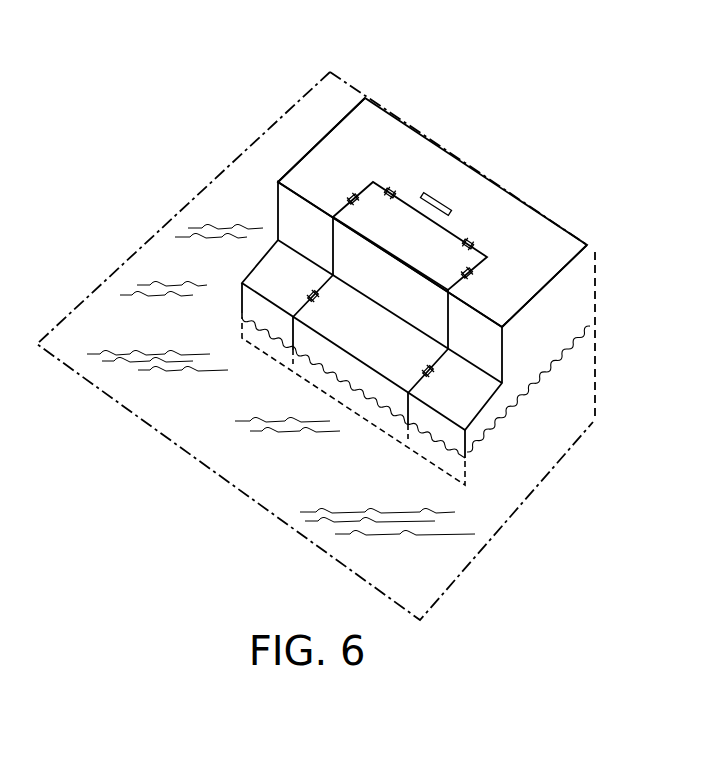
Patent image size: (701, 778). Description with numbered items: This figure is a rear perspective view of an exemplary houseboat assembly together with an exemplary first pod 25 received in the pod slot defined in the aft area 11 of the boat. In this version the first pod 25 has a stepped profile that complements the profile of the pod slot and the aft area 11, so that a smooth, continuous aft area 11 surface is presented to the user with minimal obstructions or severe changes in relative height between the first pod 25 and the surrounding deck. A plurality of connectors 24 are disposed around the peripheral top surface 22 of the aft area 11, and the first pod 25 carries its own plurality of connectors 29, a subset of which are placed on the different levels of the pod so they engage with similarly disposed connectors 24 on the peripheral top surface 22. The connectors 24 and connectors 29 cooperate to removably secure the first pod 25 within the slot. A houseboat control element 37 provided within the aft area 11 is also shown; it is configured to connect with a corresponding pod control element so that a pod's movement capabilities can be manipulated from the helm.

The aft area 11 is at (610, 270).
The peripheral top surface 22 is at (497, 297).
The connectors 24 is at (470, 281).
The first pod 25 is at (360, 220).
The connectors 29 is at (368, 200).
The houseboat control element 37 is at (436, 200).